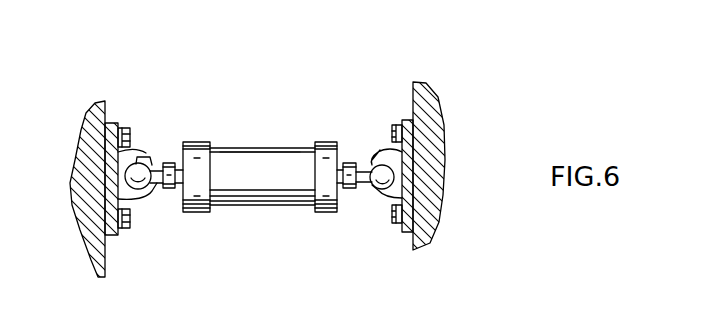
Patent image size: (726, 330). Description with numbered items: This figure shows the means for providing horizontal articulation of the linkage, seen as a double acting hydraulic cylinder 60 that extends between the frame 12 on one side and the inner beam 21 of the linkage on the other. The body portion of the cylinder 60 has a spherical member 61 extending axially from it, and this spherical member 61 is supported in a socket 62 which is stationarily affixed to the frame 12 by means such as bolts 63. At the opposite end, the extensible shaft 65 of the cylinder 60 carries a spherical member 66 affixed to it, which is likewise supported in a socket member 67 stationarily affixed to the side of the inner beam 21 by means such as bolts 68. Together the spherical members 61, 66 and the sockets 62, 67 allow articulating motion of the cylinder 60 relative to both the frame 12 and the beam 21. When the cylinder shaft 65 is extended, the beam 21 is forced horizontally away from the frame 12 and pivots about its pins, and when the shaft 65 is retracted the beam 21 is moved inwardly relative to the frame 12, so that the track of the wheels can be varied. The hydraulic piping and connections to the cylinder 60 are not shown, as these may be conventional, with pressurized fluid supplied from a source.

The frame 12 is at (105, 100).
The inner beam 21 is at (432, 118).
The double acting hydraulic cylinder 60 is at (249, 150).
The spherical member 61 is at (142, 165).
The socket 62 is at (116, 237).
The bolts 63 is at (132, 218).
The extensible shaft 65 is at (348, 162).
The spherical member 66 is at (375, 183).
The socket member 67 is at (380, 195).
The bolts 68 is at (400, 234).